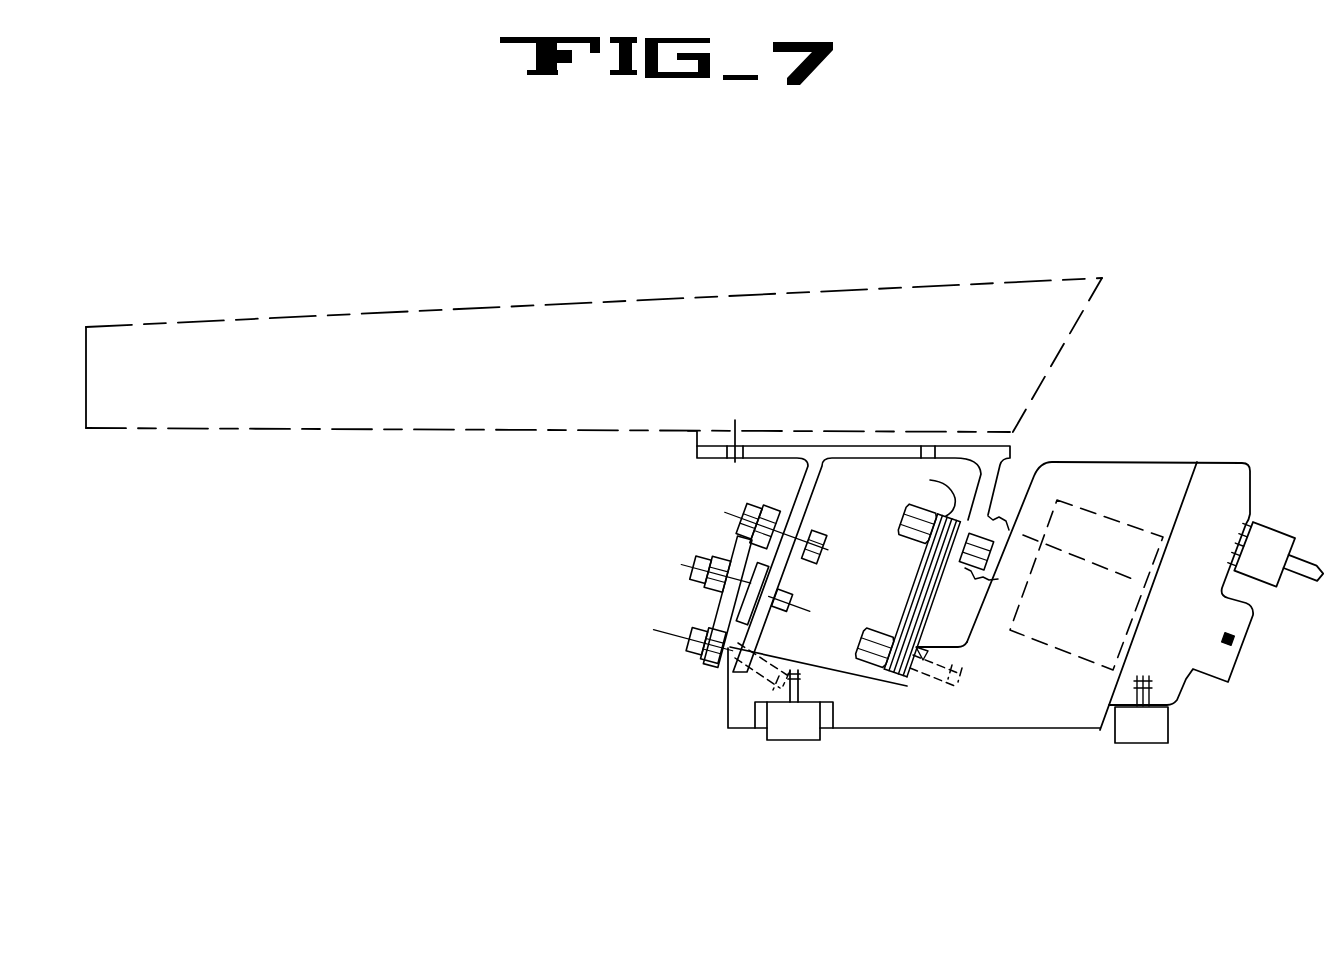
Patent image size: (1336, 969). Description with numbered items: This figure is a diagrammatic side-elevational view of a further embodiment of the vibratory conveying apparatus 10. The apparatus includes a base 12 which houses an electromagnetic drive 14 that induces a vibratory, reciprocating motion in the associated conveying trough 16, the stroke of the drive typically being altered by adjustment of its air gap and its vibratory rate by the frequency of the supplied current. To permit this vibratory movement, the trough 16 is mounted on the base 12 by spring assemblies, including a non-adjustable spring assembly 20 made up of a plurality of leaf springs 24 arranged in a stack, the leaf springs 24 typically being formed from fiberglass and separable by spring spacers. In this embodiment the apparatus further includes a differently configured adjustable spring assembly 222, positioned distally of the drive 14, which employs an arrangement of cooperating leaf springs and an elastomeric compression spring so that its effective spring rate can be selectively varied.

The vibratory conveying apparatus 10 is at (1194, 277).
The base 12 is at (1130, 461).
The electromagnetic drive 14 is at (1050, 648).
The conveying trough 16 is at (777, 291).
The non-adjustable spring assembly 20 is at (884, 582).
The leaf springs 24 is at (951, 524).
The adjustable spring assembly 222 is at (678, 661).